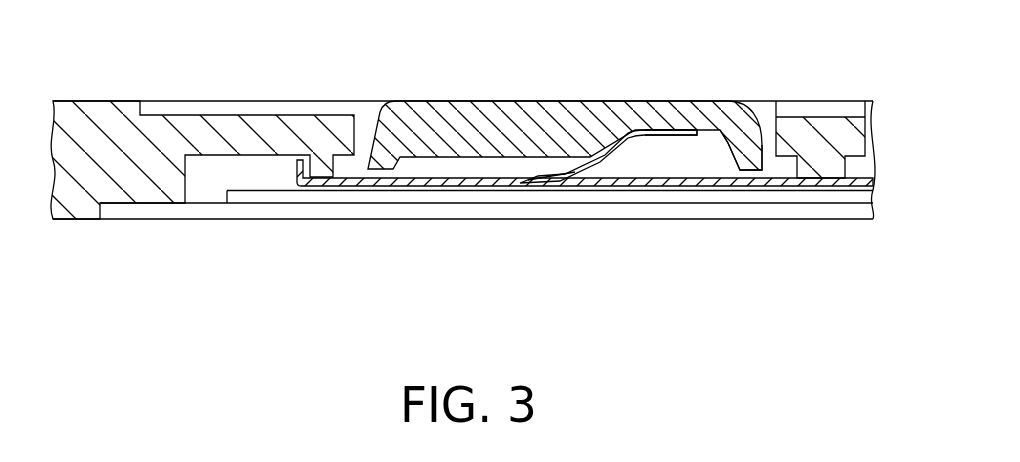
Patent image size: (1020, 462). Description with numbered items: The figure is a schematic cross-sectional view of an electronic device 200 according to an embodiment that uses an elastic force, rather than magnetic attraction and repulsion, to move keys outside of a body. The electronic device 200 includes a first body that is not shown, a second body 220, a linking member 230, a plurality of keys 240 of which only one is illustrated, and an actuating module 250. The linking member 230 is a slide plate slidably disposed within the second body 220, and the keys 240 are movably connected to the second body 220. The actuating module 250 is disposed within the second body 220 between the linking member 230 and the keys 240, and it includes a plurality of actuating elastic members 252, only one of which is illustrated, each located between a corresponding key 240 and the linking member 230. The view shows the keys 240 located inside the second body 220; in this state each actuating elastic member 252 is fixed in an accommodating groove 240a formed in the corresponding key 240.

The electronic device 200 is at (878, 328).
The second body 220 is at (155, 190).
The linking member 230 is at (428, 182).
The key 240 is at (577, 122).
The accommodating groove 240a is at (709, 143).
The actuating module 250 is at (546, 167).
The actuating elastic member 252 is at (662, 138).